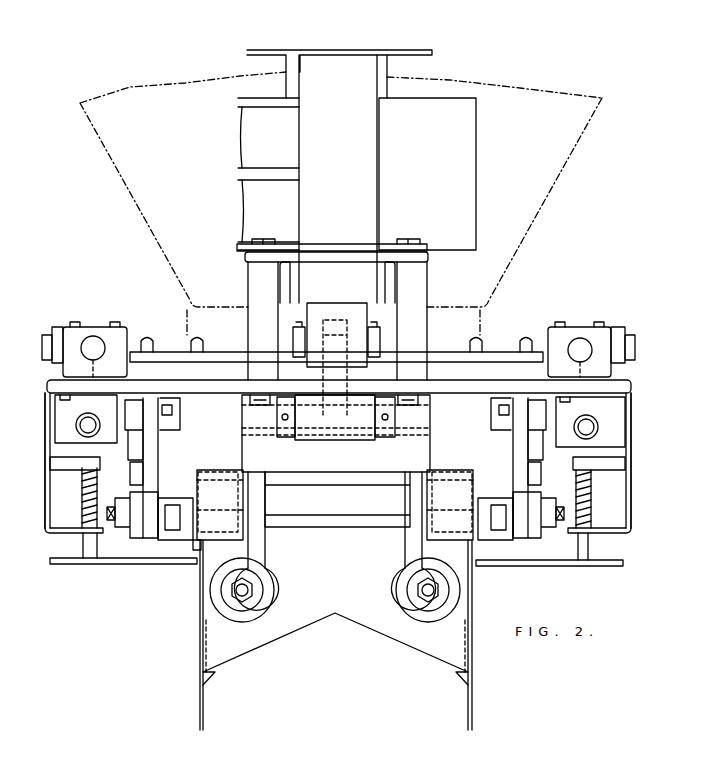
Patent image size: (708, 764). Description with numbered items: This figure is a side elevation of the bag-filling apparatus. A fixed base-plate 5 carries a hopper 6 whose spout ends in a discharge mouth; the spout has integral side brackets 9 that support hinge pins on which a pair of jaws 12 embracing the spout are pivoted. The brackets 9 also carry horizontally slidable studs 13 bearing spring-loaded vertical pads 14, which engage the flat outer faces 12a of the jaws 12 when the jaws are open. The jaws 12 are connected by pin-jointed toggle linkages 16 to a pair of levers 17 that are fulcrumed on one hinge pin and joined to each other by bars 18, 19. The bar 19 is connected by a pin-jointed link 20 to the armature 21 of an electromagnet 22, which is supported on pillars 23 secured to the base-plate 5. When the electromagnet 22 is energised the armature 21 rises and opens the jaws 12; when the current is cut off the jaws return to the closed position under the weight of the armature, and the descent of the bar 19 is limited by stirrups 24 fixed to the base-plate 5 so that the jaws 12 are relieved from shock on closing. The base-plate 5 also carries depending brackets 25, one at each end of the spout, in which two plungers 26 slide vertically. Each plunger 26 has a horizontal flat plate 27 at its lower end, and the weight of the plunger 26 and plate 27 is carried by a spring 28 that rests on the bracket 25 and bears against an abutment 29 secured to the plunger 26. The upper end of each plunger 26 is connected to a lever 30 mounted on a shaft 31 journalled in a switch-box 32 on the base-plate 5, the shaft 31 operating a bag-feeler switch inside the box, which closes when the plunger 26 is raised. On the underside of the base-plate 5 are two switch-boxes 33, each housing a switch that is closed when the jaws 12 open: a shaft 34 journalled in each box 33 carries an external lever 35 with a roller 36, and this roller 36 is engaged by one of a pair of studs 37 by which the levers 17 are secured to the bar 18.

The base-plate 5 is at (62, 384).
The hopper 6 is at (150, 214).
The side brackets 9 is at (258, 540).
The jaws 12 is at (208, 700).
The flat outer faces 12a is at (343, 592).
The studs 13 is at (228, 592).
The vertical pads 14 is at (228, 612).
The toggle linkages 16 is at (178, 533).
The levers 17 is at (140, 480).
The bar 18 is at (323, 457).
The bar 19 is at (268, 415).
The pin-jointed link 20 is at (330, 370).
The armature 21 is at (357, 312).
The electromagnet 22 is at (457, 178).
The pillars 23 is at (260, 276).
The stirrups 24 is at (203, 544).
The depending brackets 25 is at (46, 490).
The plungers 26 is at (85, 536).
The horizontal flat plate 27 is at (68, 563).
The spring 28 is at (88, 520).
The abutment 29 is at (60, 465).
The lever 30 is at (47, 333).
The shaft 31 is at (62, 327).
The switch-box 32 is at (108, 327).
The switch-boxes 33 is at (60, 420).
The shaft 34 is at (86, 430).
The external lever 35 is at (135, 420).
The roller 36 is at (150, 405).
The studs 37 is at (135, 466).